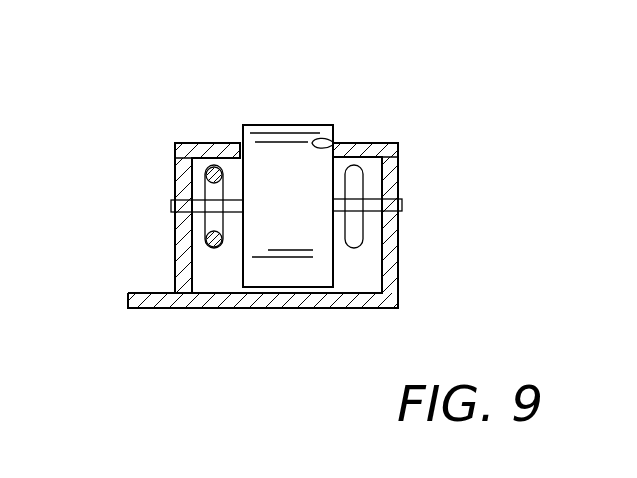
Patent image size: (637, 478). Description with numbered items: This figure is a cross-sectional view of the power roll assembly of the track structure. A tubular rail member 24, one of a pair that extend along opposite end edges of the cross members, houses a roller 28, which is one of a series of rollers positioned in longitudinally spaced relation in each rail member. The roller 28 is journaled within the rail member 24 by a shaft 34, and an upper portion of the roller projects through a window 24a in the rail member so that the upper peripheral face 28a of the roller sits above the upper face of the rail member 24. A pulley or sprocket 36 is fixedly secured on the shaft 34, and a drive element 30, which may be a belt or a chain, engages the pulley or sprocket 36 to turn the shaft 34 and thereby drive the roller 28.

The tubular rail member 24 is at (398, 285).
The window 24a is at (333, 137).
The roller 28 is at (240, 266).
The upper peripheral face 28a is at (278, 135).
The drive element 30 is at (208, 163).
The shaft 34 is at (402, 208).
The pulley or sprocket 36 is at (186, 220).